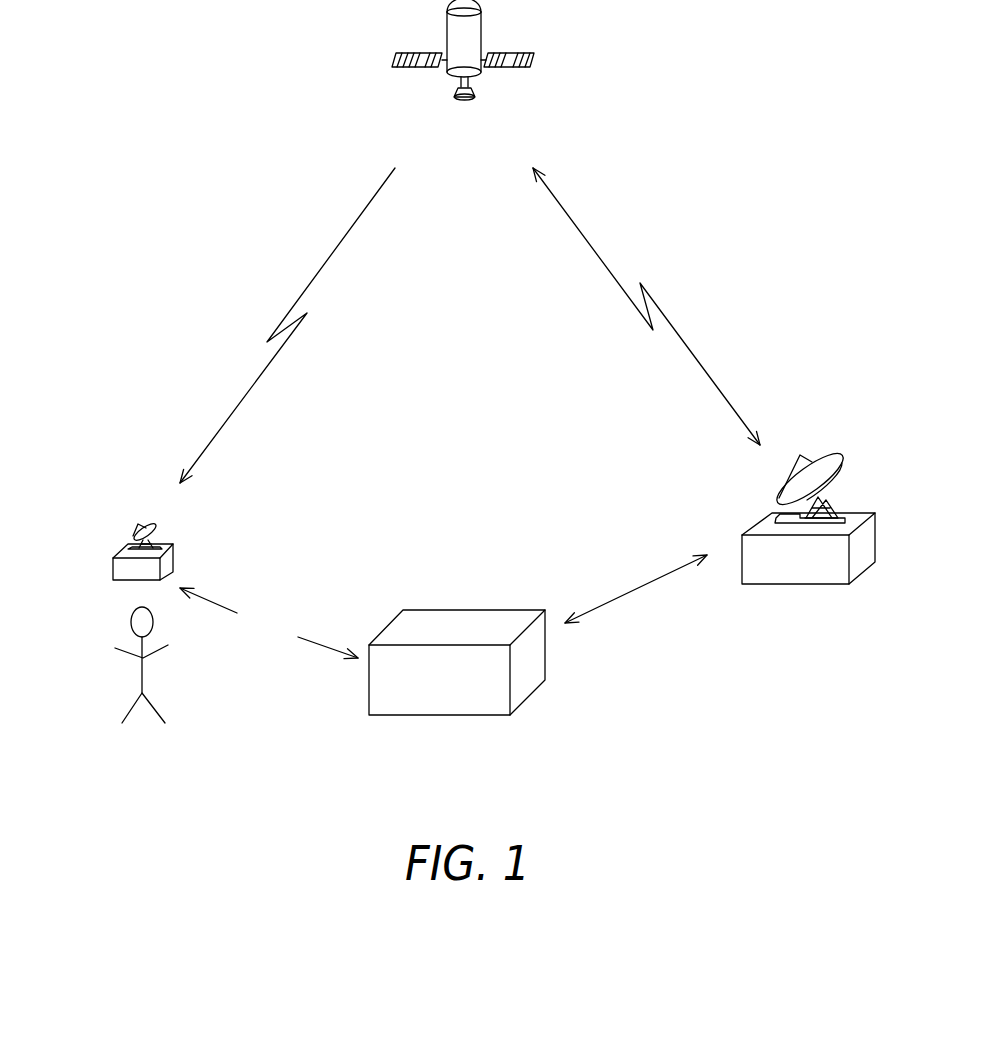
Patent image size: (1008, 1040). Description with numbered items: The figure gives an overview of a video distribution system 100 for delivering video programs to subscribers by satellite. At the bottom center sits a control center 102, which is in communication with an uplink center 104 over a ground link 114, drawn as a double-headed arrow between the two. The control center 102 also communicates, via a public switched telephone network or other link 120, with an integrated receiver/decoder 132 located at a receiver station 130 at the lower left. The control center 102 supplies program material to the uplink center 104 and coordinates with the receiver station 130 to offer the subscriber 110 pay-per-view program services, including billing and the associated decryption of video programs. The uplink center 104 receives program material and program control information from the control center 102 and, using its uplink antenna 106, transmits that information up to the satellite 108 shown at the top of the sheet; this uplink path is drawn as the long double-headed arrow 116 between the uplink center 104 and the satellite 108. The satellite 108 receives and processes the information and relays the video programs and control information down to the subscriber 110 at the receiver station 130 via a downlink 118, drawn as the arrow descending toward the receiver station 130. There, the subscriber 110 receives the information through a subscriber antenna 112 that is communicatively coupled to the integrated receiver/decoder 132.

The video distribution system 100 is at (748, 203).
The control center 102 is at (533, 695).
The uplink center 104 is at (790, 584).
The uplink antenna 106 is at (845, 462).
The satellite 108 is at (506, 67).
The subscriber 110 is at (167, 670).
The subscriber antenna 112 is at (141, 524).
The ground link 114 is at (632, 588).
The satellite feeder link 116 is at (687, 347).
The downlink 118 is at (333, 250).
The public switched telephone network or other link 120 is at (300, 598).
The receiver station 130 is at (176, 516).
The integrated receiver/decoder 132 is at (113, 568).